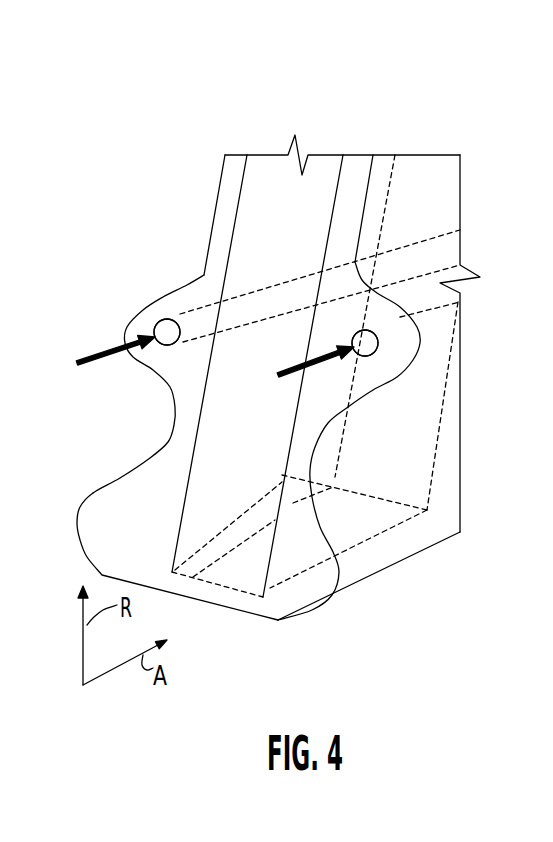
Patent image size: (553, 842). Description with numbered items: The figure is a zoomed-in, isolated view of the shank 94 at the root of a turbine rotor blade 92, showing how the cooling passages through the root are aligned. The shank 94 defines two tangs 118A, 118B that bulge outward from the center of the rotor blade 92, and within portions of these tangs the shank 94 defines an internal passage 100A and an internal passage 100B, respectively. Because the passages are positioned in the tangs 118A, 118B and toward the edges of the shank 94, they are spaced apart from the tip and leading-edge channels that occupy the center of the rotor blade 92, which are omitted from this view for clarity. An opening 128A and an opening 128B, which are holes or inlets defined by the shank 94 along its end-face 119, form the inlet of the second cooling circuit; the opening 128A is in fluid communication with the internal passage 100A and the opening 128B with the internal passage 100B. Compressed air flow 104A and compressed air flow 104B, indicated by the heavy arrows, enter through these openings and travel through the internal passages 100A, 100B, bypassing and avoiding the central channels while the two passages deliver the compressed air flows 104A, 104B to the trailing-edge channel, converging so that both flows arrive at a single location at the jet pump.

The rotor blade 92 is at (216, 110).
The shank 94 is at (168, 420).
The internal passage 100A is at (200, 310).
The internal passage 100B is at (392, 352).
The compressed air flow 104A is at (105, 357).
The compressed air flow 104B is at (318, 362).
The tang 118A is at (122, 332).
The tang 118B is at (420, 348).
The end-face 119 is at (122, 512).
The opening 128A is at (160, 318).
The opening 128B is at (368, 357).